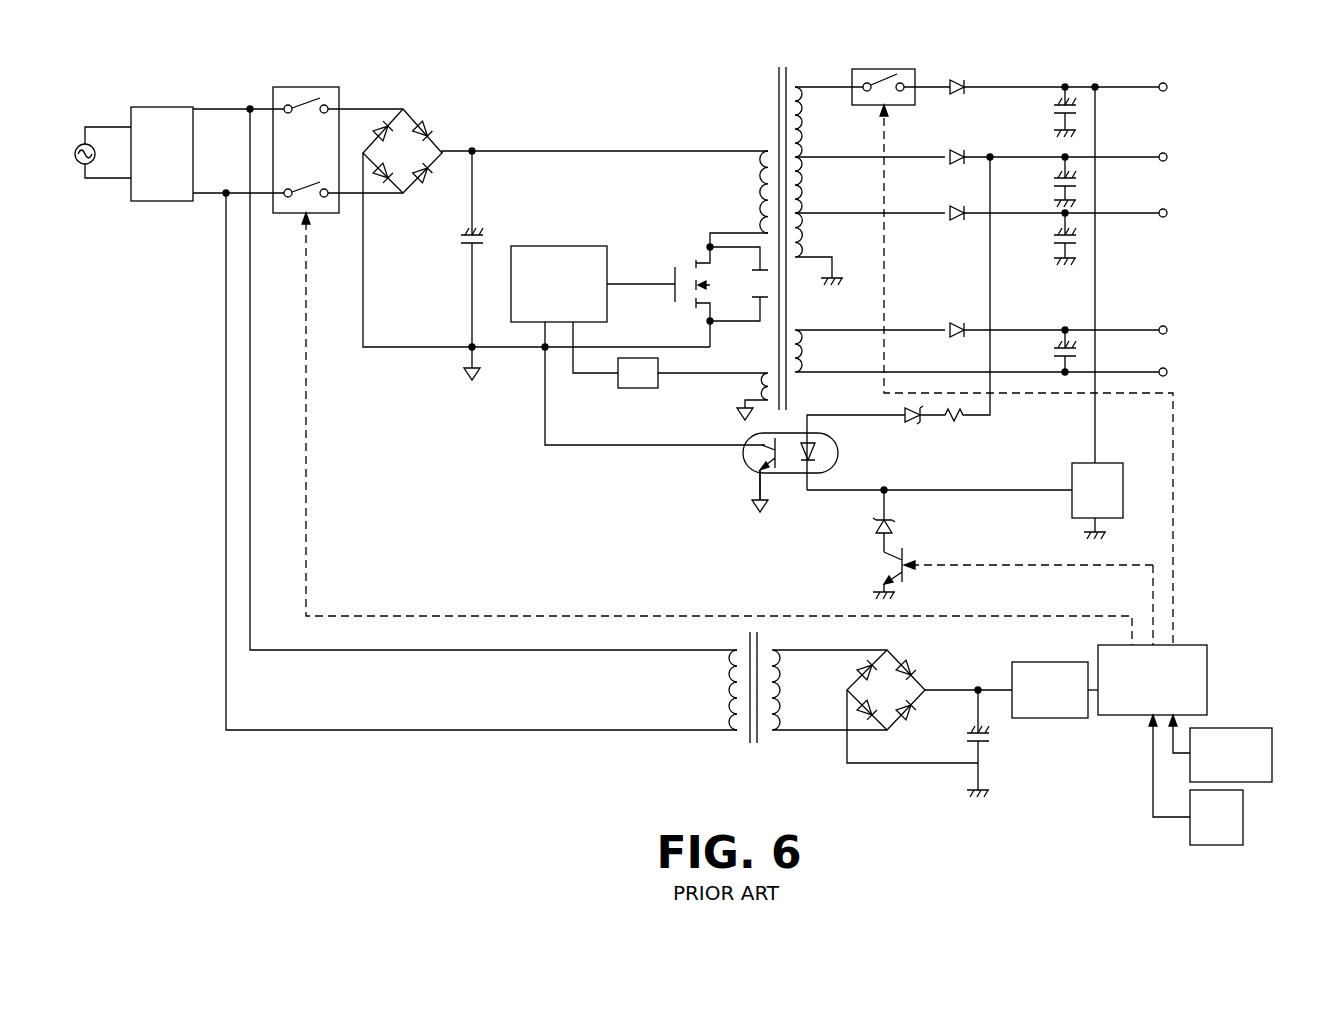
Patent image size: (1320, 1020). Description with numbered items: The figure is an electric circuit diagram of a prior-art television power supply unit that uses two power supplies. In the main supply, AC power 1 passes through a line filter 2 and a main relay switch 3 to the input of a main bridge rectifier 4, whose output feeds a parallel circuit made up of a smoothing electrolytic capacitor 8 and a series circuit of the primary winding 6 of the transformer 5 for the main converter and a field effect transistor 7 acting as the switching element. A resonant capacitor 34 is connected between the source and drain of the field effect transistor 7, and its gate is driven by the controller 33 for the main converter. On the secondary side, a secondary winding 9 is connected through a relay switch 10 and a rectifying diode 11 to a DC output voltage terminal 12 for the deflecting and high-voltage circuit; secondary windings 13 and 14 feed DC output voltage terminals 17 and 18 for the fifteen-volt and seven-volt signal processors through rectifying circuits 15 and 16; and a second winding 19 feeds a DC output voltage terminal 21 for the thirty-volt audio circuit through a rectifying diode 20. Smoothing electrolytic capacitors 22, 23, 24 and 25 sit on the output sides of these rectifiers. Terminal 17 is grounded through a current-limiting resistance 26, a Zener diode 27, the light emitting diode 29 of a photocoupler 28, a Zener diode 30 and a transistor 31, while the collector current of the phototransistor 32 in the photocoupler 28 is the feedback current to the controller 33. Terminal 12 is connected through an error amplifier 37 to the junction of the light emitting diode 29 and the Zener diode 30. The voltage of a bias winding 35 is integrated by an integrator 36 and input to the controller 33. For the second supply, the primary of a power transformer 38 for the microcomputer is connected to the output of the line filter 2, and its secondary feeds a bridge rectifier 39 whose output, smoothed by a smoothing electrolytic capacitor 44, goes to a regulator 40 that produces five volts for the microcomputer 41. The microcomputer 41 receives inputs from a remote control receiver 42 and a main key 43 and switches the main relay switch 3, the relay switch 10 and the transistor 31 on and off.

The AC power 1 is at (97, 127).
The line filter 2 is at (147, 201).
The main relay switch 3 is at (323, 87).
The main bridge rectifier 4 is at (416, 120).
The transformer for the main converter 5 is at (777, 107).
The primary winding 6 is at (762, 166).
The field effect transistor 7 is at (694, 262).
The smoothing electrolytic capacitor 8 is at (480, 237).
The secondary winding 9 is at (805, 120).
The relay switch 10 is at (900, 105).
The rectifying diode 11 is at (964, 80).
The DC output voltage terminal 12 is at (1130, 90).
The secondary winding 13 is at (805, 178).
The secondary winding 14 is at (805, 235).
The rectifying circuit 15 is at (946, 166).
The rectifying circuit 16 is at (946, 222).
The DC output voltage terminal 17 is at (1112, 160).
The DC output voltage terminal 18 is at (1128, 216).
The second winding 19 is at (805, 345).
The rectifying diode 20 is at (950, 336).
The DC output voltage terminal 21 is at (1118, 333).
The smoothing electrolytic capacitor 22 is at (1053, 105).
The smoothing electrolytic capacitor 23 is at (1052, 178).
The smoothing electrolytic capacitor 24 is at (1052, 235).
The smoothing electrolytic capacitor 25 is at (1052, 348).
The current-limiting resistance 26 is at (955, 418).
The Zener diode 27 is at (904, 410).
The photocoupler 28 is at (744, 464).
The light emitting diode 29 is at (815, 453).
The Zener diode 30 is at (896, 526).
The transistor 31 is at (896, 566).
The phototransistor 32 is at (770, 473).
The controller for the main converter 33 is at (577, 246).
The resonant capacitor 34 is at (758, 270).
The bias winding 35 is at (762, 382).
The integrator 36 is at (622, 388).
The error amplifier 37 is at (1123, 482).
The power transformer for the microcomputer 38 is at (753, 743).
The bridge rectifier 39 is at (905, 665).
The regulator 40 is at (1077, 718).
The microcomputer 41 is at (1207, 661).
The remote control receiver 42 is at (1228, 728).
The main key 43 is at (1213, 845).
The smoothing electrolytic capacitor 44 is at (985, 740).